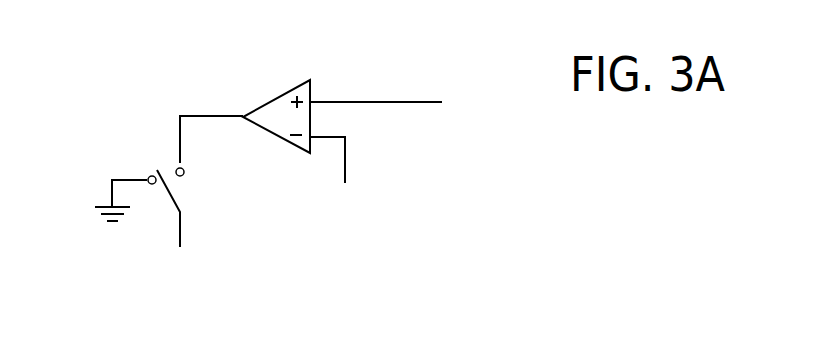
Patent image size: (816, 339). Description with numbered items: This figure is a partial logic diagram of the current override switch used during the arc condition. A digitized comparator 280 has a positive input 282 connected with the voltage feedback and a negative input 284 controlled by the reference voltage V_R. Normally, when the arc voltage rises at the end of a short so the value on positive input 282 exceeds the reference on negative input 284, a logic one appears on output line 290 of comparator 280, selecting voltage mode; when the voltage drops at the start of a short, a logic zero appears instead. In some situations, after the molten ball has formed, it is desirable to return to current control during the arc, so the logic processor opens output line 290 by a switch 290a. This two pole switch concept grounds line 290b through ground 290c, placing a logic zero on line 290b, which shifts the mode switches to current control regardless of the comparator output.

The digitized comparator 280 is at (312, 85).
The positive input 282 is at (415, 100).
The negative input 284 is at (347, 170).
The output line 290 is at (178, 140).
The switch 290a is at (180, 192).
The line 290b is at (182, 230).
The ground 290c is at (125, 178).